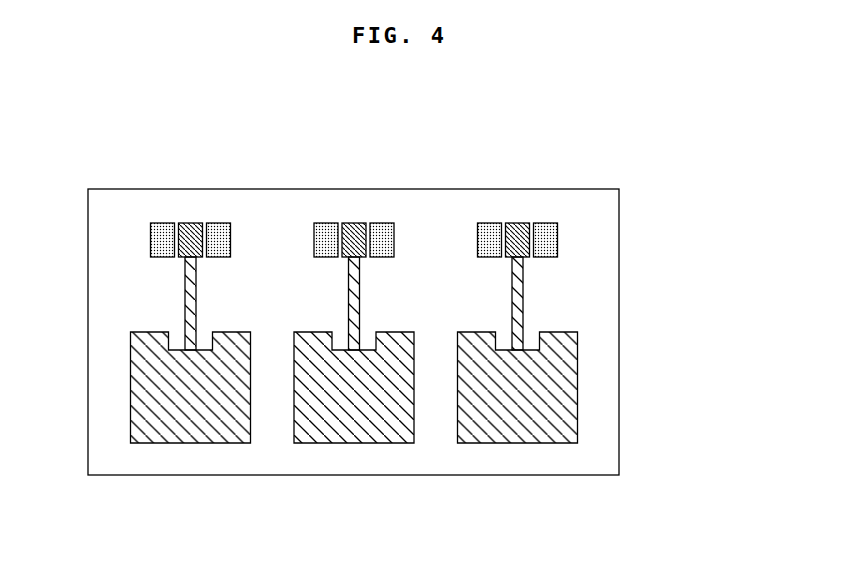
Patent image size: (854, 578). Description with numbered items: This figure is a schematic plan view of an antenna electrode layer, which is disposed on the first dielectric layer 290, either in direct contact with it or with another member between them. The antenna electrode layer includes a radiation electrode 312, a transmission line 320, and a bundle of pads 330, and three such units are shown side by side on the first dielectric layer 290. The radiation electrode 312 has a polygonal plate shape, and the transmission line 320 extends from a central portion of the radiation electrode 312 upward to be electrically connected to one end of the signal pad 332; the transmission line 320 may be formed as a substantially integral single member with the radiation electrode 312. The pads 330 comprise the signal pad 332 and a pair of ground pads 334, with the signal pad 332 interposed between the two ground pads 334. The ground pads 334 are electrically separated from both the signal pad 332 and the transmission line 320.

The first dielectric layer 290 is at (612, 388).
The radiation electrode 312 is at (520, 430).
The transmission line 320 is at (523, 290).
The pads 330 is at (385, 175).
The signal pad 332 is at (520, 222).
The ground pads 334 is at (492, 223).